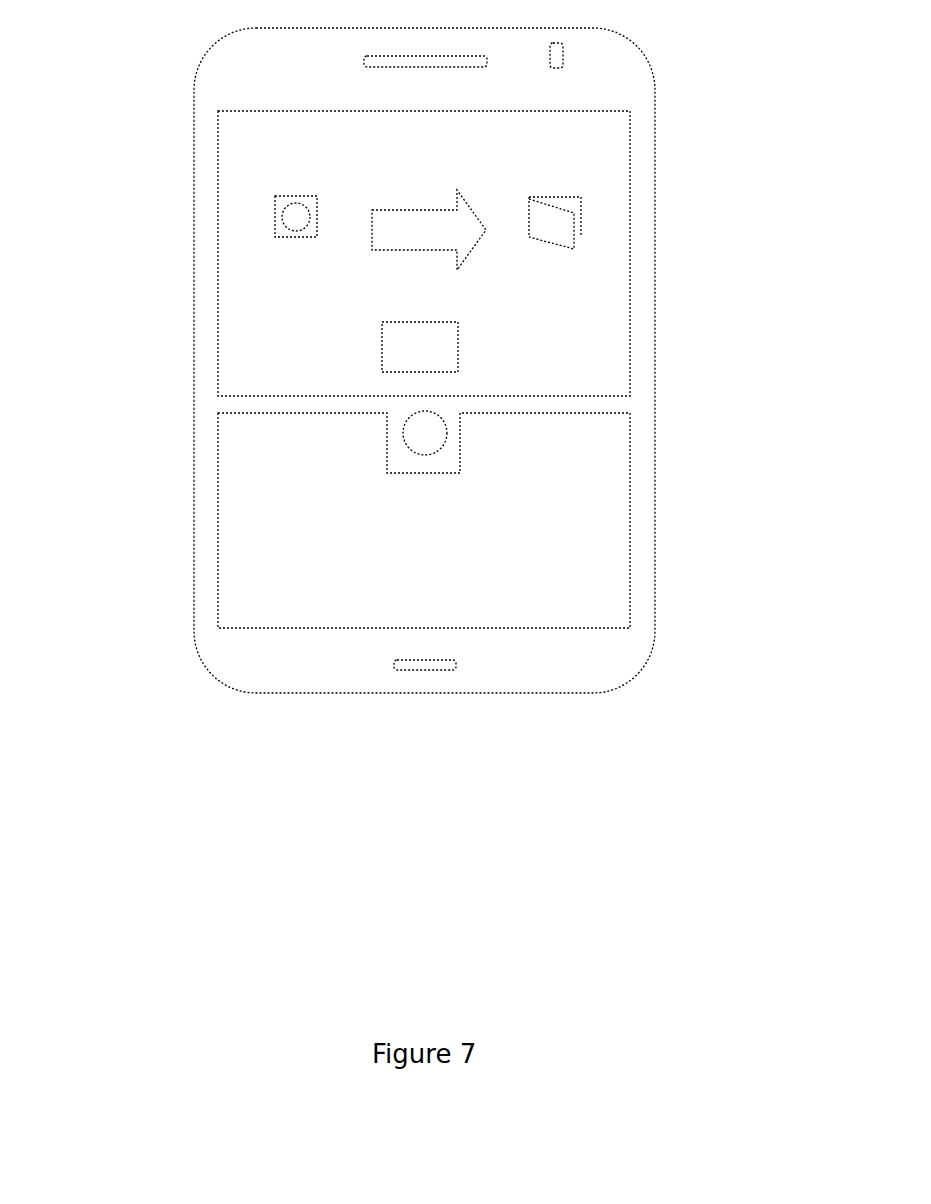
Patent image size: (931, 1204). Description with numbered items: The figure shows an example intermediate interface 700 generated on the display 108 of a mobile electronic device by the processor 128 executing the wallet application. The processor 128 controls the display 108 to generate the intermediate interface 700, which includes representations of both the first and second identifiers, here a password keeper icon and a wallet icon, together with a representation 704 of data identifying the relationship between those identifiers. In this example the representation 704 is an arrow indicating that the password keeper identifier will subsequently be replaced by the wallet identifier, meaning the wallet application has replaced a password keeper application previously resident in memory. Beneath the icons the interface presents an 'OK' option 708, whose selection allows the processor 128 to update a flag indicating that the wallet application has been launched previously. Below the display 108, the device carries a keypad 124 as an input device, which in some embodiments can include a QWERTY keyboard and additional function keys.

The intermediate interface 700 is at (198, 248).
The display 108 is at (630, 254).
The representation of data identifying the relationship between identifiers 704 is at (466, 197).
The OK button 708 is at (450, 362).
The keypad 124 is at (630, 520).
The processor 128 is at (410, 448).